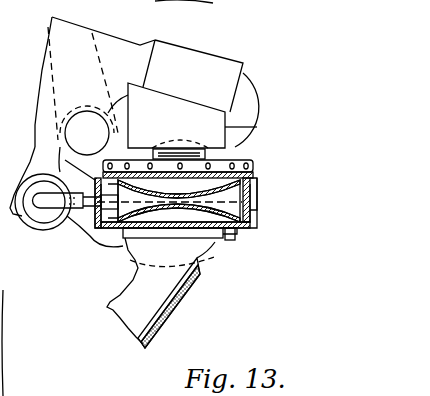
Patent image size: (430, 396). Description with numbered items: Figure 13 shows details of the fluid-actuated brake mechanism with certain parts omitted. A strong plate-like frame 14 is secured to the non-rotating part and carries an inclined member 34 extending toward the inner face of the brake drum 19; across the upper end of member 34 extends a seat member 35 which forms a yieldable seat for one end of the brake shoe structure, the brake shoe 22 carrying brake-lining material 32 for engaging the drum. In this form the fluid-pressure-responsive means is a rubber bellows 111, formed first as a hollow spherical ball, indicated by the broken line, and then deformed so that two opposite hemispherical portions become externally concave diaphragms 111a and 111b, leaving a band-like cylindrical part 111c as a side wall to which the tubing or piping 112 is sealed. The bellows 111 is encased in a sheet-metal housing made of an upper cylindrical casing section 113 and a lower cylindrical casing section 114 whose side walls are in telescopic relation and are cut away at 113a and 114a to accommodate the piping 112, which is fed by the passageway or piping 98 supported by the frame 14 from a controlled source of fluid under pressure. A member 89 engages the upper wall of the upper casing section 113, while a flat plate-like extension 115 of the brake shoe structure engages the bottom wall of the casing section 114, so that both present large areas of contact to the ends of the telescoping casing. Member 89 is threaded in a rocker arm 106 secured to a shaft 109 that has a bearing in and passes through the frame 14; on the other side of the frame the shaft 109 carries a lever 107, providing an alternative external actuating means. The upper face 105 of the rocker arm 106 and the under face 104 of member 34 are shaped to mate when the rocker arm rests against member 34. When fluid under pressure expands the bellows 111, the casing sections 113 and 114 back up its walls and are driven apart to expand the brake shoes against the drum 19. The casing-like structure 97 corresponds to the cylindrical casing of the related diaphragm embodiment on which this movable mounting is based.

The frame 14 is at (245, 88).
The brake drum 19 is at (4, 307).
The brake shoe 22 is at (150, 298).
The brake-lining material 32 is at (165, 316).
The member 34 is at (172, 50).
The seat member 35 is at (8, 268).
The member 89 is at (253, 166).
The casing-like structure 97 is at (0, 381).
The passageway or piping 98 is at (43, 207).
The under face of member 34 104 is at (182, 93).
The upper face of rocker arm 105 is at (152, 90).
The rocker arm 106 is at (257, 127).
The lever 107 is at (93, 57).
The shaft 109 is at (78, 117).
The bellows 111 is at (172, 213).
The diaphragm 111a is at (235, 172).
The diaphragm 111b is at (226, 238).
The band-like or cylindrical part 111c is at (248, 200).
The tubing or piping 112 is at (62, 213).
The upper cylindrical casing section 113 is at (256, 185).
The cutaway 113a is at (86, 212).
The lower cylindrical casing section 114 is at (255, 220).
The cutaway 114a is at (55, 188).
The flat plate-like extension 115 is at (110, 238).